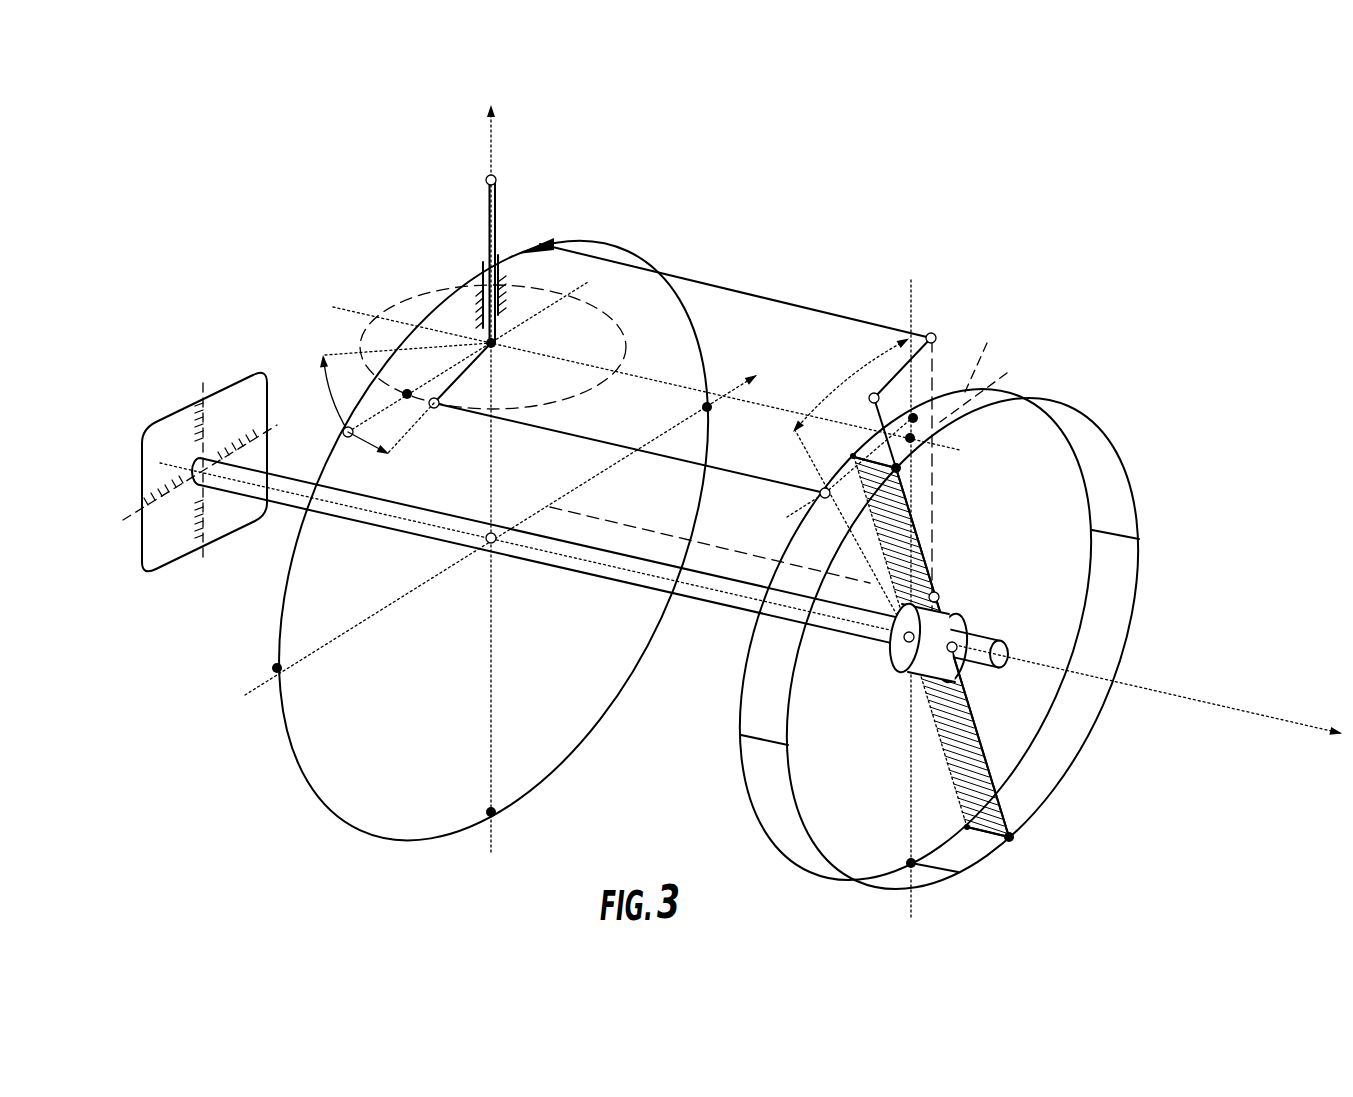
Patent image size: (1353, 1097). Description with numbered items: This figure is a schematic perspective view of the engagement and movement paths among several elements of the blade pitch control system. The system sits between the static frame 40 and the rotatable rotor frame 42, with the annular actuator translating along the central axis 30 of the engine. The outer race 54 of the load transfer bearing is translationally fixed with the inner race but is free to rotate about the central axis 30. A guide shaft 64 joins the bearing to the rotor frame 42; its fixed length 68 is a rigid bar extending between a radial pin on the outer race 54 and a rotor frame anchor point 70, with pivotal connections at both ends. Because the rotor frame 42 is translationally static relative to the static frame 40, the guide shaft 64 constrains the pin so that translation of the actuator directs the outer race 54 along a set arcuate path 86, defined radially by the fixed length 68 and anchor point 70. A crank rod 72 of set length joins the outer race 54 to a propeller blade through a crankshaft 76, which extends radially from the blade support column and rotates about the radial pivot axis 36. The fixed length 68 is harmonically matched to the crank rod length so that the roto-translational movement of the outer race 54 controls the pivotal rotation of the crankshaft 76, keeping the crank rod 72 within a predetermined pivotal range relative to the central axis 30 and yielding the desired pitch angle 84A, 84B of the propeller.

The central axis 30 is at (1282, 735).
The radial pivot axis 36 is at (491, 466).
The static frame 40 is at (983, 637).
The rotor frame 42 is at (320, 803).
The outer race 54 is at (1057, 791).
The guide shaft 64 is at (886, 385).
The fixed length 68 is at (929, 535).
The rotor frame anchor point 70 is at (937, 336).
The crank rod 72 is at (568, 438).
The crankshaft 76 is at (467, 370).
The pitch angle 84A is at (365, 447).
The pitch angle 84B is at (327, 400).
The arcuate path 86 is at (870, 380).